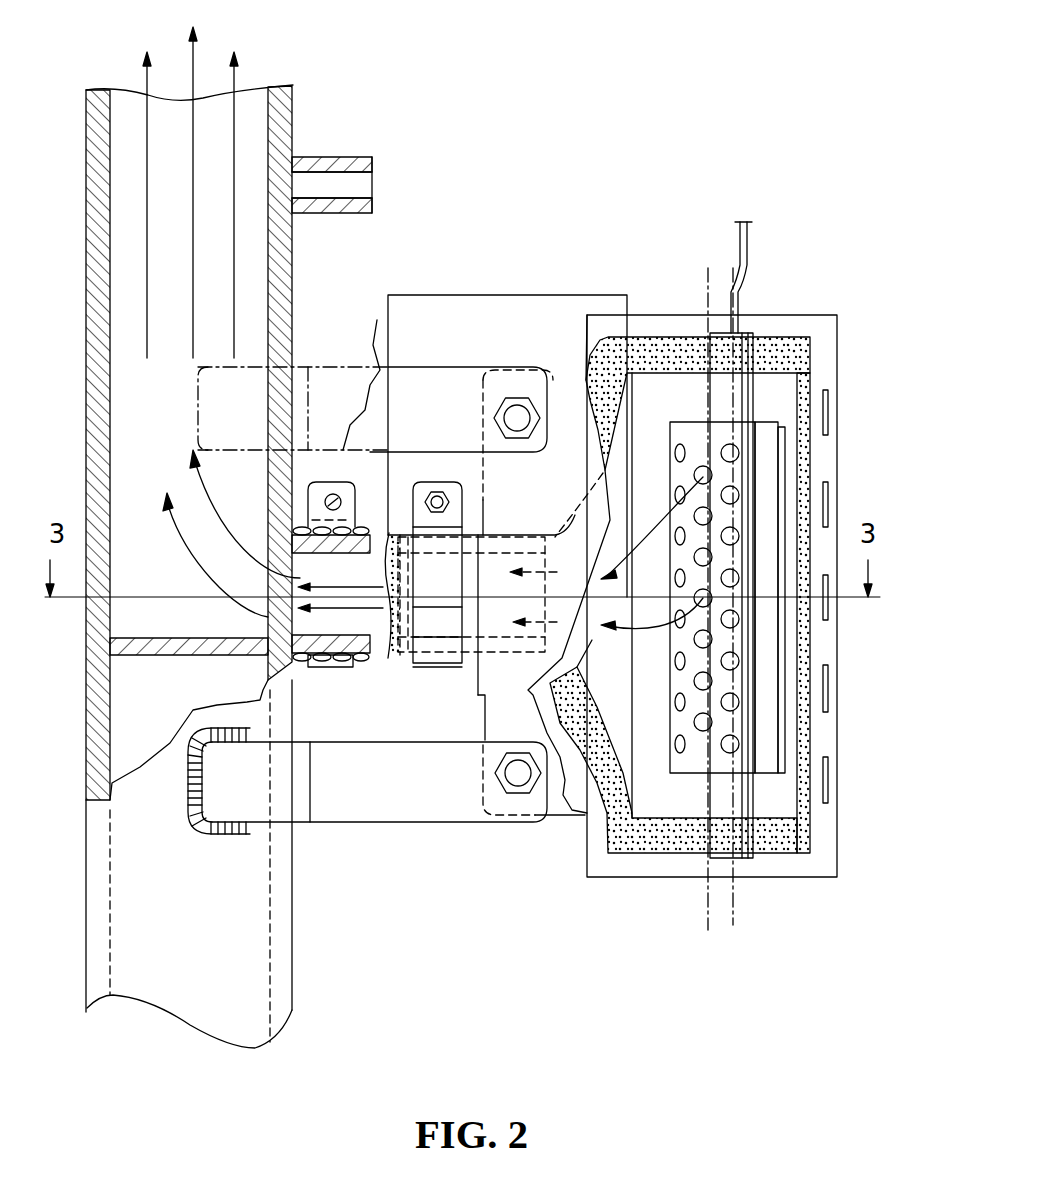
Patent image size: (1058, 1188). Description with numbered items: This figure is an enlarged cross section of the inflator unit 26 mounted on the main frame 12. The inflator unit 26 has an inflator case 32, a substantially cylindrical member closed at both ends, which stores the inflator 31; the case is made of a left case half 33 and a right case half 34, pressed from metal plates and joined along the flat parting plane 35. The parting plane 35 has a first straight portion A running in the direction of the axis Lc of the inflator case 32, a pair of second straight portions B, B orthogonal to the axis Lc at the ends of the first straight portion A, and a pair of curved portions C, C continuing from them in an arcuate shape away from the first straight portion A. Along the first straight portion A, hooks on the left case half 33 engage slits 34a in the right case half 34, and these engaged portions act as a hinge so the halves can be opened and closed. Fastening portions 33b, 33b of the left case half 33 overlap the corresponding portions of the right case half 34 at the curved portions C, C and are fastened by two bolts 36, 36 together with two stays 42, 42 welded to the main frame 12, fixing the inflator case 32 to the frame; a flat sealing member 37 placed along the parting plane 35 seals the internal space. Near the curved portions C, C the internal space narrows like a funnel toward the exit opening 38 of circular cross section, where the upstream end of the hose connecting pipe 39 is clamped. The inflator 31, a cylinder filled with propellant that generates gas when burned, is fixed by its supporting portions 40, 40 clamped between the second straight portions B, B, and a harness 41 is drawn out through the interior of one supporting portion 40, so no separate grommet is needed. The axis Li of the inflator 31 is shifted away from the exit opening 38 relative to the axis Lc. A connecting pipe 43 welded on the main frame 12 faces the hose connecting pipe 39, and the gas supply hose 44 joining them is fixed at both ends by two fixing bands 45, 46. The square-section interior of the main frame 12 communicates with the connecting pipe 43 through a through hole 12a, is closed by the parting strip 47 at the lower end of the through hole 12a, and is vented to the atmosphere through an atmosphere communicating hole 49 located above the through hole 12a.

The main frame 12 is at (300, 135).
The through hole 12a is at (300, 618).
The inflator unit 26 is at (640, 283).
The inflator 31 is at (677, 723).
The inflator case 32 is at (793, 295).
The left case half 33 is at (571, 496).
The fastening portions 33b is at (487, 482).
The right case half 34 is at (848, 343).
The slits 34a is at (826, 410).
The parting plane 35 is at (600, 865).
The bolts 36 is at (517, 410).
The flat sealing member 37 is at (790, 845).
The exit opening 38 is at (503, 643).
The hose connecting pipe 39 is at (507, 535).
The supporting portions 40 is at (720, 378).
The harness 41 is at (748, 242).
The stays 42 is at (377, 385).
The connecting pipe 43 is at (322, 668).
The gas supply hose 44 is at (398, 657).
The fixing band 45 is at (338, 668).
The fixing band 46 is at (443, 625).
The parting strip 47 is at (190, 655).
The atmosphere communicating hole 49 is at (372, 160).
The first straight portion A is at (820, 467).
The second straight portions B is at (683, 325).
The curved portions C is at (588, 362).
The axis of the inflator case Lc is at (703, 917).
The axis of the inflator Li is at (733, 923).